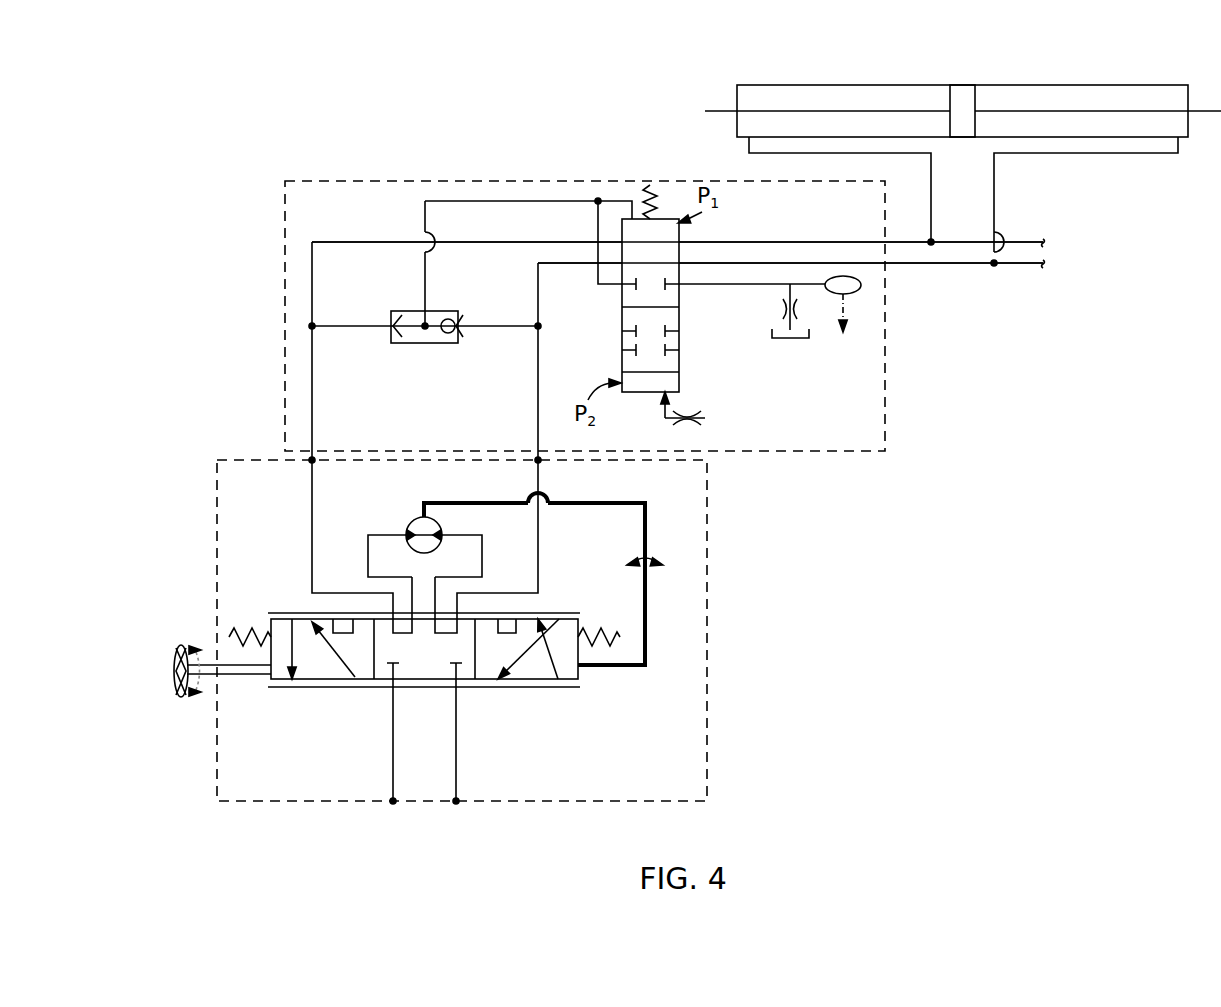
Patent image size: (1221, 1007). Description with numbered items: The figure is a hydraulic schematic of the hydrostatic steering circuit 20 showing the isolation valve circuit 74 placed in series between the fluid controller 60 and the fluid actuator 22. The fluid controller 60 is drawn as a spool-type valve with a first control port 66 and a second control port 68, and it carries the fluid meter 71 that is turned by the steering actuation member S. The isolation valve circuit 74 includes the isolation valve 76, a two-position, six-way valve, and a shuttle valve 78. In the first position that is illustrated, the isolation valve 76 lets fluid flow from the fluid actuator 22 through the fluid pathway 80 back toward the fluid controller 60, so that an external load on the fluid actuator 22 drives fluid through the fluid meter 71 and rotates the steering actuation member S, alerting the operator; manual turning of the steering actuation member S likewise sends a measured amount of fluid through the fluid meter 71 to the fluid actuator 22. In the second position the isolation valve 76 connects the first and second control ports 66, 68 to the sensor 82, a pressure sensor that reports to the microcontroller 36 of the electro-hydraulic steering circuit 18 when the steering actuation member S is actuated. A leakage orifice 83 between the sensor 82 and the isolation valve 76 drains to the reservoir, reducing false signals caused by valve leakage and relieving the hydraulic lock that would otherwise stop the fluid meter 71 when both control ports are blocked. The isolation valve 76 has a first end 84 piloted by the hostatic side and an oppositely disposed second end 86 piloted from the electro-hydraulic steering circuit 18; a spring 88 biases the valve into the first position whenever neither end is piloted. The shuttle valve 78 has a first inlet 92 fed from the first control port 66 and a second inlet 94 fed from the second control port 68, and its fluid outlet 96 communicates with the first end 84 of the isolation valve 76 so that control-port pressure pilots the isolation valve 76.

The hydrostatic steering circuit 20 is at (240, 146).
The fluid actuator 22 is at (1130, 181).
The fluid controller 60 is at (568, 807).
The first control port 66 is at (307, 462).
The second control port 68 is at (535, 462).
The fluid meter 71 is at (410, 525).
The isolation valve circuit 74 is at (278, 270).
The isolation valve 76 is at (687, 338).
The shuttle valve 78 is at (430, 345).
The fluid pathway 80 is at (663, 261).
The sensor 82 is at (862, 291).
The leakage orifice 83 is at (782, 310).
The first end 84 is at (663, 217).
The second end 86 is at (635, 394).
The spring 88 is at (647, 195).
The first inlet 92 is at (396, 323).
The second inlet 94 is at (459, 321).
The fluid outlet 96 is at (426, 309).
The electro-hydraulic steering circuit 18 is at (710, 417).
The microcontroller 36 is at (843, 340).
The steering actuation member S is at (178, 648).